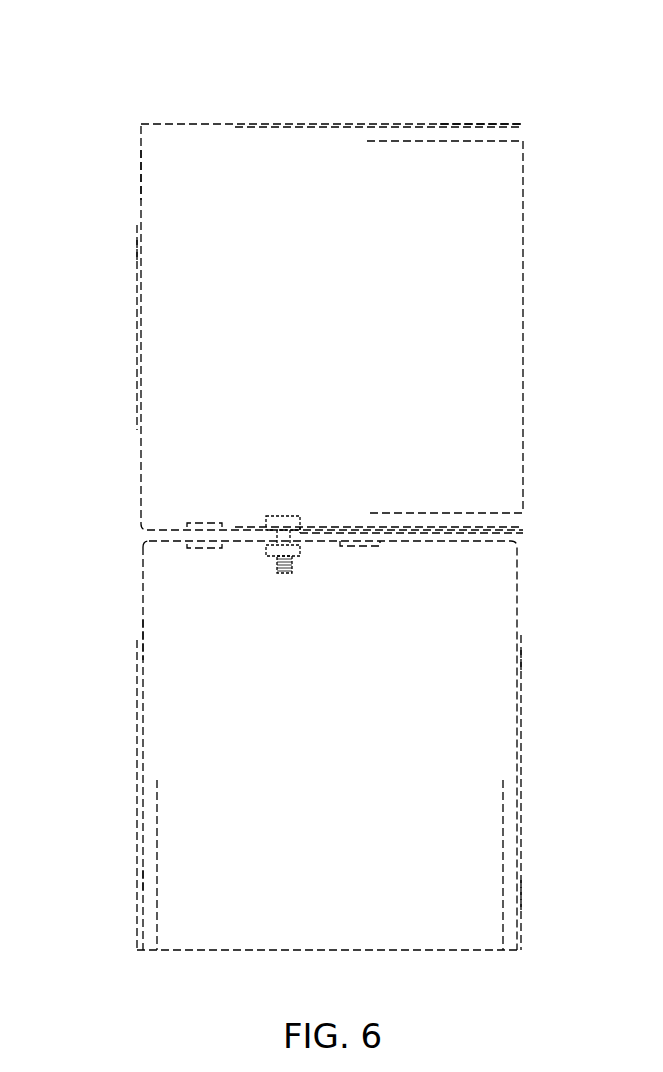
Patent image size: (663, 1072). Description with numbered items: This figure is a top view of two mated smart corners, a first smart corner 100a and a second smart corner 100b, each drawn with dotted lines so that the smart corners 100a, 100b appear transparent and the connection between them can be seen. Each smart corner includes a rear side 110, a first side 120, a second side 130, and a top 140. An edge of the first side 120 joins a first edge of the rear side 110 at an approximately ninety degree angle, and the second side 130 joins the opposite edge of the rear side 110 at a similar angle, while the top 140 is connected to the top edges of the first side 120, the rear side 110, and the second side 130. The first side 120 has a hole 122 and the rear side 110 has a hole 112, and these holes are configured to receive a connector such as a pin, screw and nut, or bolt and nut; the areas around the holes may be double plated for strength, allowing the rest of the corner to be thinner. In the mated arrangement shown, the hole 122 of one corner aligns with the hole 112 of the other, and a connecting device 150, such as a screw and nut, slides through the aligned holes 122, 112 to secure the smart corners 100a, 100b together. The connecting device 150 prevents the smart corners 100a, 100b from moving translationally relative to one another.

The first smart corner 100a is at (248, 80).
The second smart corner 100b is at (90, 720).
The rear side 110 is at (135, 313).
The hole 112 is at (262, 546).
The first side 120 is at (523, 531).
The hole 122 is at (304, 529).
The second side 130 is at (468, 124).
The top 140 is at (203, 175).
The connecting device 150 is at (275, 515).